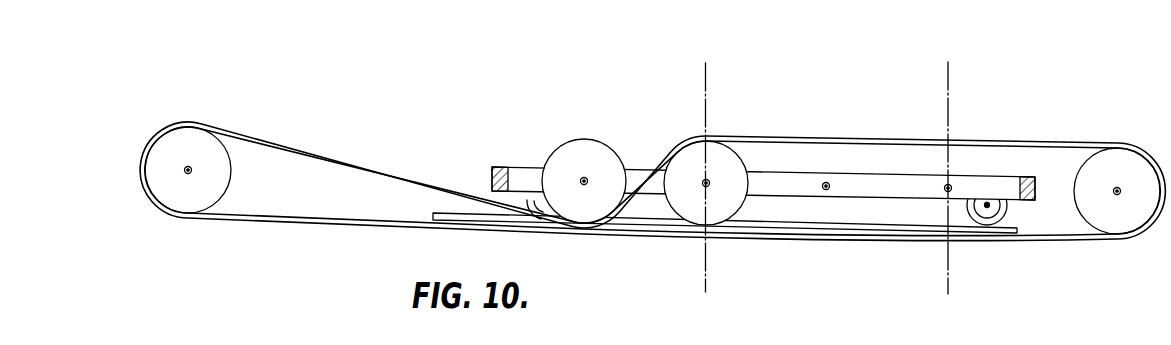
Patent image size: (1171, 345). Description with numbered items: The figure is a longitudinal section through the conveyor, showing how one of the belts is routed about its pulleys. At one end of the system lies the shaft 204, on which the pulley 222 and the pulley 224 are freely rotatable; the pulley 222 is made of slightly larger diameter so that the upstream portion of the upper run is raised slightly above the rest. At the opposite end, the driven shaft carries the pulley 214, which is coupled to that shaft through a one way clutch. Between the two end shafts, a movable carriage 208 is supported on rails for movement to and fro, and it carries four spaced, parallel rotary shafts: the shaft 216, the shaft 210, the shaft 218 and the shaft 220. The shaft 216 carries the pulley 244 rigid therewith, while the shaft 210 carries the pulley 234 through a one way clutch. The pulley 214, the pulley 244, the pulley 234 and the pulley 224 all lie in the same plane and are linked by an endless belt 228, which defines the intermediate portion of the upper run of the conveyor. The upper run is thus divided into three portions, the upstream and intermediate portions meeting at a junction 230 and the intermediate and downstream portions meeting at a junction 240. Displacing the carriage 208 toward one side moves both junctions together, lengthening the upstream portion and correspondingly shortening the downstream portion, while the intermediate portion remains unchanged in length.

The shaft 204 is at (1113, 196).
The movable carriage 208 is at (870, 180).
The rotary shaft 210 is at (704, 187).
The pulley 214 is at (165, 190).
The rotary shaft 216 is at (582, 185).
The rotary shaft 218 is at (827, 190).
The rotary shaft 220 is at (945, 192).
The pulley 222 is at (181, 166).
The pulley 224 is at (1103, 170).
The endless belt 228 is at (384, 170).
The junction 230 is at (945, 167).
The pulley 234 is at (689, 153).
The junction 240 is at (704, 166).
The pulley 244 is at (572, 150).